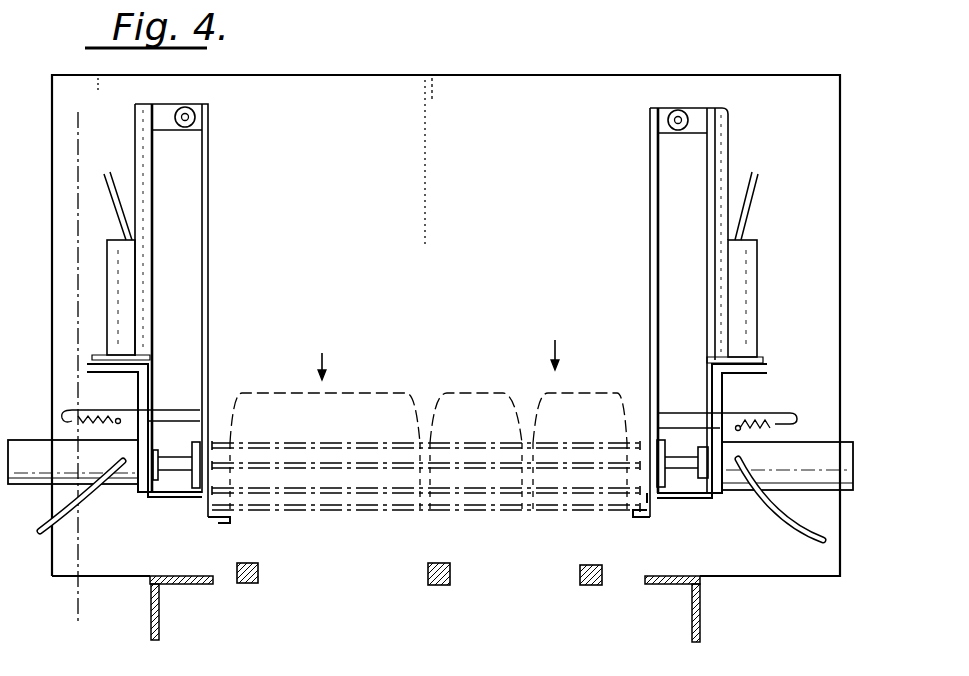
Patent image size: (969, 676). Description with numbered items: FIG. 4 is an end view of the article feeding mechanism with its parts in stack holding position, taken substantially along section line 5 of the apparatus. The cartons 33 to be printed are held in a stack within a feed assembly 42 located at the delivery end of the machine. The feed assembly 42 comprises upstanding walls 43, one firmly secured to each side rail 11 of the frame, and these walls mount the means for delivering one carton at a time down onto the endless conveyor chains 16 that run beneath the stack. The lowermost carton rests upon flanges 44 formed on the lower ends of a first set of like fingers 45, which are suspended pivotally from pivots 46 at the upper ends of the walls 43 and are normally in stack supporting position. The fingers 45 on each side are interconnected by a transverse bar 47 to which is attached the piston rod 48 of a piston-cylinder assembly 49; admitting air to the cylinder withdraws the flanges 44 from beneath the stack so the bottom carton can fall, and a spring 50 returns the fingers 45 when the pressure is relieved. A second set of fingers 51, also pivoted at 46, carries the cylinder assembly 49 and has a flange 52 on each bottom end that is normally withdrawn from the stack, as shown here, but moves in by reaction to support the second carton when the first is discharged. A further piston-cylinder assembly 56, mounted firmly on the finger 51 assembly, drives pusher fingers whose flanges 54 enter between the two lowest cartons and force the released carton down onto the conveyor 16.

The section line 5- 5 is at (100, 105).
The side rail 11 is at (701, 607).
The endless chains 16 is at (428, 575).
The egg carton 33 is at (400, 392).
The feed assembly 42 is at (549, 75).
The upstanding walls 43 is at (540, 236).
The flanges 44 is at (646, 518).
The fingers 45 is at (210, 238).
The pivots 46 is at (187, 107).
The transverse bar 47 is at (198, 442).
The piston rod 48 is at (165, 455).
The piston-cylinder assembly 49 is at (817, 473).
The spring 50 is at (70, 418).
The second set of fingers 51 is at (140, 150).
The flange 52 is at (197, 496).
The flange 54 is at (688, 500).
The piston-cylinder assembly 56 is at (118, 292).